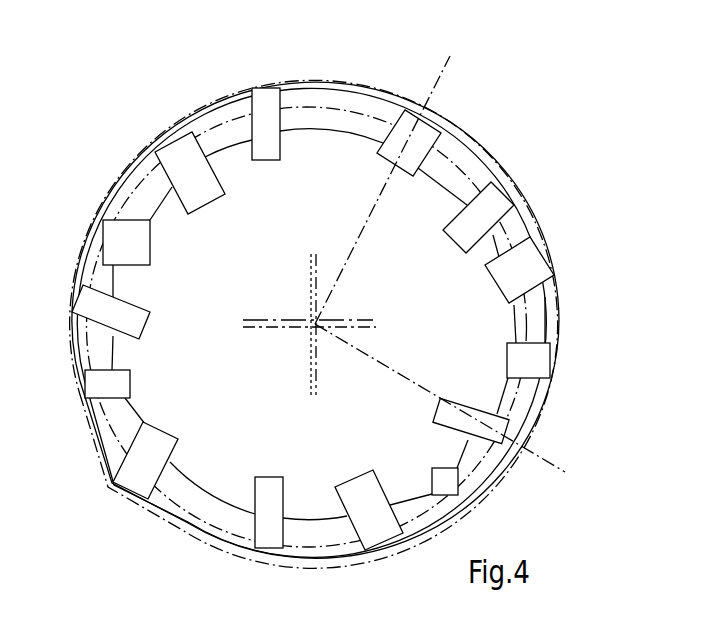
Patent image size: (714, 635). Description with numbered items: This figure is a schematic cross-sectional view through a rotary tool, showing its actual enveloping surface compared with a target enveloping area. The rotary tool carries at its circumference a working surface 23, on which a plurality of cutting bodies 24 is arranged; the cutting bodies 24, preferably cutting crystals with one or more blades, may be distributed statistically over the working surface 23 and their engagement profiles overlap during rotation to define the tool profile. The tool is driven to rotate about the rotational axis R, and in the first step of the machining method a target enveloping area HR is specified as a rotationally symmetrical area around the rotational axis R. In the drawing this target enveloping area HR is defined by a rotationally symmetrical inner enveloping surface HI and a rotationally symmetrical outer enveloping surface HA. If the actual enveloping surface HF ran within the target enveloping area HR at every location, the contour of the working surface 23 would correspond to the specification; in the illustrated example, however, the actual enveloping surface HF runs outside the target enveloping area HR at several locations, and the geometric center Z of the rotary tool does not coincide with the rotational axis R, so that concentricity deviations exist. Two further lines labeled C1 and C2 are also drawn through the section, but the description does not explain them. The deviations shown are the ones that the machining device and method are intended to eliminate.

The working surface 23 is at (104, 494).
The cutting bodies 24 is at (207, 162).
The outer enveloping surface HA is at (500, 178).
The inner enveloping surface HI is at (556, 320).
The actual enveloping surface HF is at (540, 405).
The target enveloping area HR is at (213, 117).
The first axis line C1 is at (448, 80).
The second axis line C2 is at (557, 456).
The geometric center Z is at (314, 325).
The rotational axis R is at (317, 330).